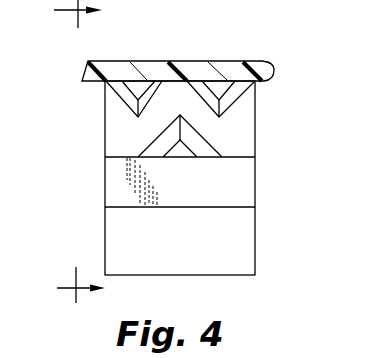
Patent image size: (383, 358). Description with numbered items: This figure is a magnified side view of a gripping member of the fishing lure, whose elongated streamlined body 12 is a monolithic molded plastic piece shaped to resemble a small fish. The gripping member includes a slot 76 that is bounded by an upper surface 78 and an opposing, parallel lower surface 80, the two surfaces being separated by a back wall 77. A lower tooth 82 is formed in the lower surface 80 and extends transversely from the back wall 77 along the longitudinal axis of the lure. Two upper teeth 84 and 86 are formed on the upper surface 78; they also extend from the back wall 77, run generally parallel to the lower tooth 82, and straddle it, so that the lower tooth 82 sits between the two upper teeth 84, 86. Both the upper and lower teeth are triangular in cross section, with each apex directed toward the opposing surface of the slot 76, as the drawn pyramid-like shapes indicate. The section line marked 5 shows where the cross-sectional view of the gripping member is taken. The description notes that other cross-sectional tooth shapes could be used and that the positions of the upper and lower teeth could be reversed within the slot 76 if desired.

The section line 5- 5 is at (72, 151).
The elongated streamlined body 12 is at (110, 62).
The slot 76 is at (240, 128).
The back wall 77 is at (162, 103).
The upper surface 78 is at (185, 107).
The lower surface 80 is at (237, 157).
The lower tooth 82 is at (165, 138).
The upper tooth 84 is at (127, 100).
The upper tooth 86 is at (245, 92).